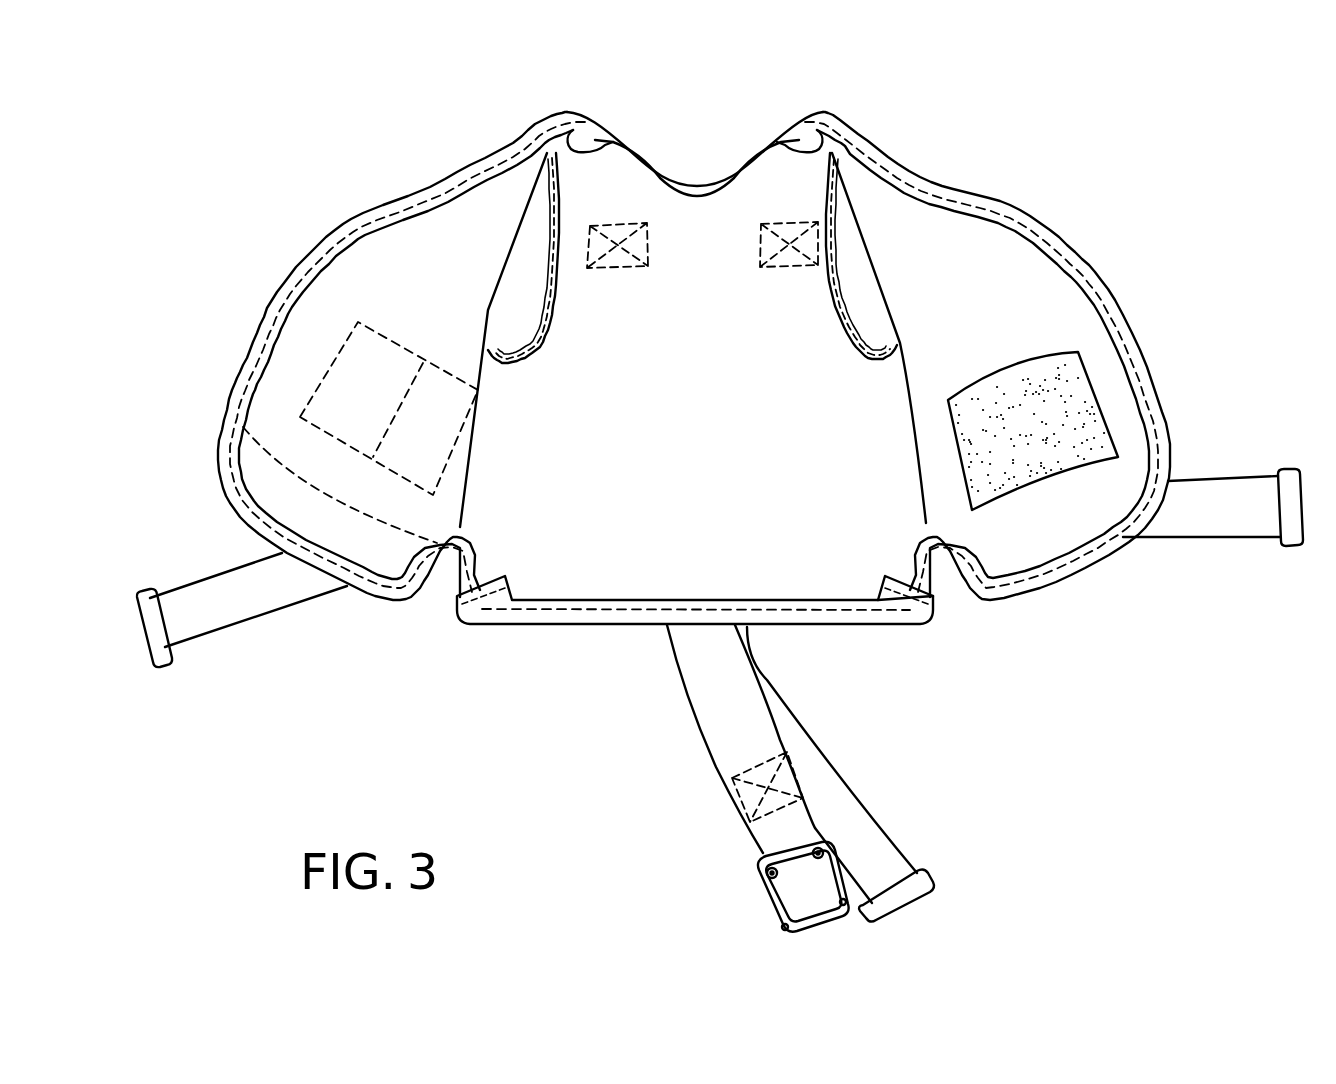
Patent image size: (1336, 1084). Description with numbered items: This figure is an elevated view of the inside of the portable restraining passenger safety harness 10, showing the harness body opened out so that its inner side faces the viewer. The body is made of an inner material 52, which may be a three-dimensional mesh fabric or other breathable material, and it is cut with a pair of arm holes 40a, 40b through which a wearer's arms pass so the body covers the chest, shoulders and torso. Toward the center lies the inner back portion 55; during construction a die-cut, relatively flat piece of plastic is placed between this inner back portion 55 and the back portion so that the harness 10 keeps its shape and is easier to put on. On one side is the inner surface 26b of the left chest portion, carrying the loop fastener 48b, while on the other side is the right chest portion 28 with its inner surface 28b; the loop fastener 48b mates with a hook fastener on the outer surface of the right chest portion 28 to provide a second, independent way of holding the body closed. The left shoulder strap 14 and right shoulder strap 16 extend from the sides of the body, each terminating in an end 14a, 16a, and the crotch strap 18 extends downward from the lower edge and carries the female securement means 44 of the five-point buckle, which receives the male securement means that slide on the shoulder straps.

The portable restraining passenger safety harness 10 is at (245, 156).
The left shoulder strap 14 is at (1188, 522).
The right strap end 14a is at (1290, 527).
The right shoulder strap 16 is at (240, 613).
The left strap end 16a is at (147, 637).
The crotch strap 18 is at (700, 733).
The inner surface 26b is at (1007, 253).
The right chest portion 28 is at (287, 348).
The inner surface 28b is at (330, 285).
The arm hole 40a is at (888, 302).
The arm hole 40b is at (545, 302).
The female securement means 44 is at (762, 893).
The loop fastener 48b is at (1083, 383).
The inner material 52 is at (587, 580).
The inner back portion 55 is at (720, 410).